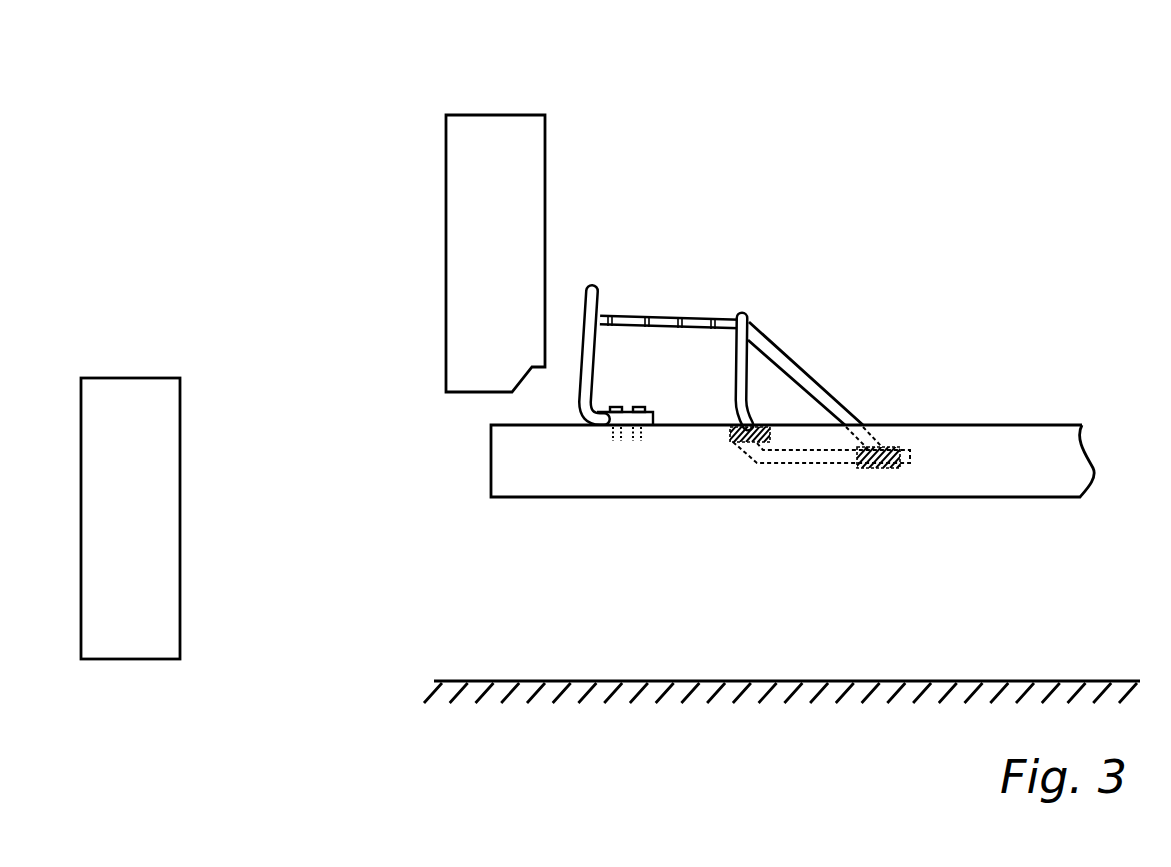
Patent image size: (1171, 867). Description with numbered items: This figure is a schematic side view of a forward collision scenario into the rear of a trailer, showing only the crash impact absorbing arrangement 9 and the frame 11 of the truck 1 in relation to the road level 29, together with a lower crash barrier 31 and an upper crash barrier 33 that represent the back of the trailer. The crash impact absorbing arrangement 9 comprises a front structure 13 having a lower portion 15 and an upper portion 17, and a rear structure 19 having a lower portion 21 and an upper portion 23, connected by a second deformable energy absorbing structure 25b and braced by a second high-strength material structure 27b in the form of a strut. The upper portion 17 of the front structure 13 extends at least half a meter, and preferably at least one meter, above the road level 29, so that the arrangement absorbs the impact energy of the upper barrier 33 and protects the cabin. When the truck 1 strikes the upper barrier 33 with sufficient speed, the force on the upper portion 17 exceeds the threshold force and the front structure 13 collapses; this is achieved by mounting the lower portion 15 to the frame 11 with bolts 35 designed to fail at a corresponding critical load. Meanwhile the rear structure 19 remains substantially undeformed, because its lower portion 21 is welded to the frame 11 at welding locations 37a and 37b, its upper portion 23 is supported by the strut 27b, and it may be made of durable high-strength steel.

The truck 1 is at (888, 133).
The crash impact absorbing arrangement 9 is at (788, 300).
The frame 11 is at (779, 498).
The front structure 13 is at (578, 340).
The lower portion of the front structure 15 is at (601, 427).
The upper portion of the front structure 17 is at (578, 292).
The rear structure 19 is at (760, 382).
The lower portion of the rear structure 21 is at (823, 458).
The upper portion of the rear structure 23 is at (742, 318).
The second deformable energy absorbing structure 25b is at (670, 328).
The second high-strength material structure 27b is at (833, 390).
The road level 29 is at (992, 681).
The lower crash barrier 31 is at (155, 588).
The upper crash barrier 33 is at (492, 128).
The bolts 35 is at (621, 430).
The welding location 37a is at (748, 442).
The welding location 37b is at (878, 470).